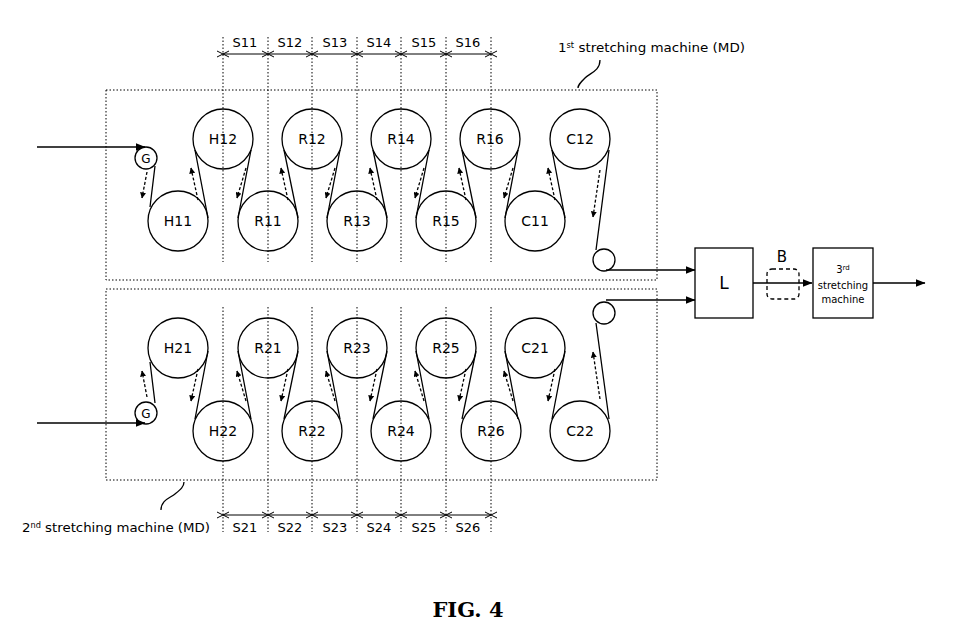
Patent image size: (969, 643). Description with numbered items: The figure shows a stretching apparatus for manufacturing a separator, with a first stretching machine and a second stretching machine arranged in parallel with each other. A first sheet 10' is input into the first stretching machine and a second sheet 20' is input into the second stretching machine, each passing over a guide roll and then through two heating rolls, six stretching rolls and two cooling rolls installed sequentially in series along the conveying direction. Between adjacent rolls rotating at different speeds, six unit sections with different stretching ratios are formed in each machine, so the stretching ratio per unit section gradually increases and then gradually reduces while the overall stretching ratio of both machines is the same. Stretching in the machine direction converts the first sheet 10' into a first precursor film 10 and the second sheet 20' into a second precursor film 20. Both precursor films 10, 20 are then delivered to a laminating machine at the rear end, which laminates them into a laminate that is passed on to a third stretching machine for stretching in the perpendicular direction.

The first precursor film 10 is at (660, 227).
The second precursor film 20 is at (660, 345).
The first sheet 10' is at (91, 123).
The second sheet 20' is at (91, 447).